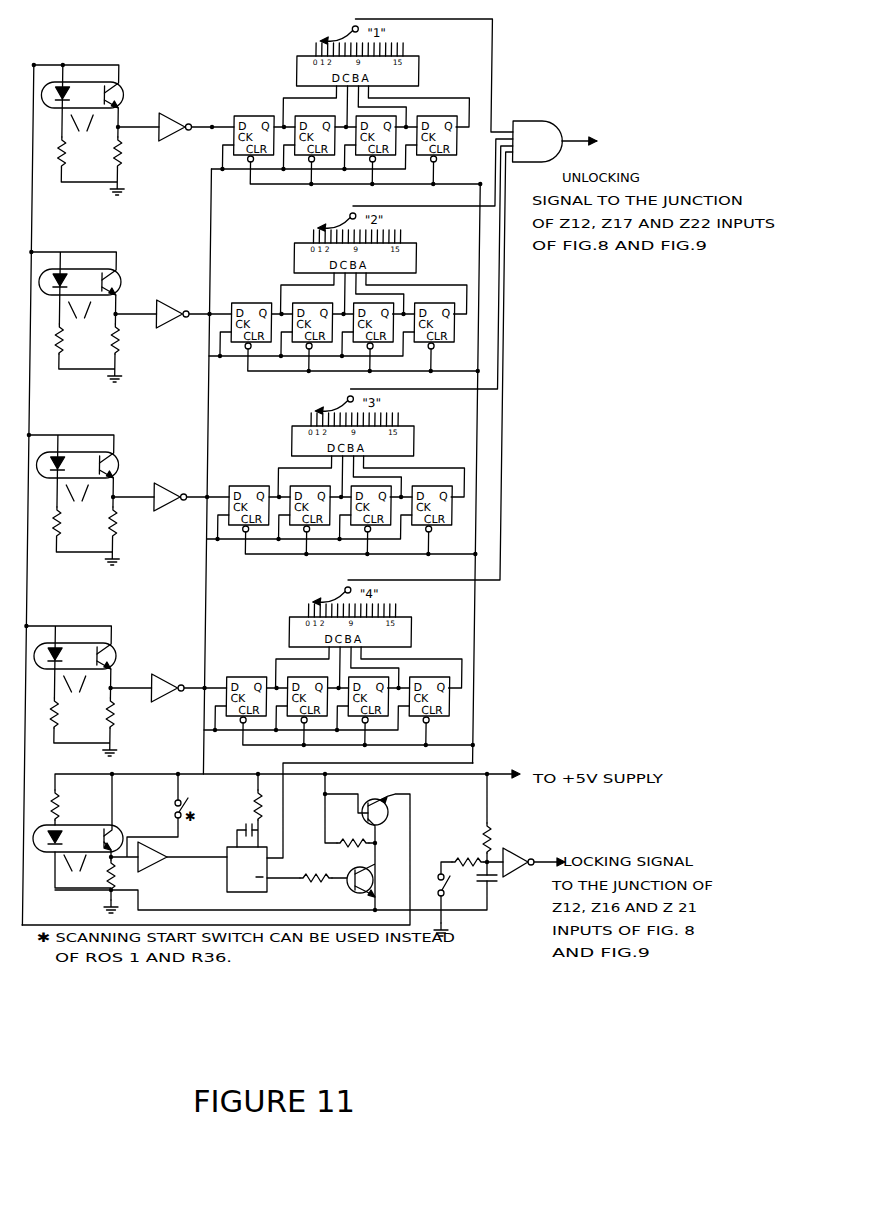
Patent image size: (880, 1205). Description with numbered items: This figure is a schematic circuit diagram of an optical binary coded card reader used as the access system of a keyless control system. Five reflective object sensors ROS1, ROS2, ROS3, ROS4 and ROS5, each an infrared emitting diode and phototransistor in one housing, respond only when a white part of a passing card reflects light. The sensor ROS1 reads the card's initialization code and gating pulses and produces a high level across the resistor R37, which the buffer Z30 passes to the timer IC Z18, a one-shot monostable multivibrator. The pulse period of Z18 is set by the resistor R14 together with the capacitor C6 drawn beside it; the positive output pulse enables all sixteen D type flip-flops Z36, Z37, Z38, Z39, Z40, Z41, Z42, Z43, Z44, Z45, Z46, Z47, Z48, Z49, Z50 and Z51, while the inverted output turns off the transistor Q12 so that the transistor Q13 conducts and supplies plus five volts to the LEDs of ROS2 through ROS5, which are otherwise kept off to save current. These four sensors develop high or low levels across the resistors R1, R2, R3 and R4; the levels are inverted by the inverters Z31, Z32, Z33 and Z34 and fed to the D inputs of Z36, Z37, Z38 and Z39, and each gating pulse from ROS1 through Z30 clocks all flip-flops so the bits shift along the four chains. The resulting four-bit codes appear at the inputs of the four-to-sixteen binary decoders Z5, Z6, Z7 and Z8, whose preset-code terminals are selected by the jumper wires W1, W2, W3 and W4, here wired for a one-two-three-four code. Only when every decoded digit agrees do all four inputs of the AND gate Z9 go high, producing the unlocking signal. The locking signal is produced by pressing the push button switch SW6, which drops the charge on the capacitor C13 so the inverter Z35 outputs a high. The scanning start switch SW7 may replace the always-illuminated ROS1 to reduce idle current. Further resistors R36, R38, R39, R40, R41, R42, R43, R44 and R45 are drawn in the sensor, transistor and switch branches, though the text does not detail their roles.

The reflective object sensor ROS1 is at (93, 841).
The reflective object sensor ROS2 is at (102, 92).
The reflective object sensor ROS3 is at (100, 279).
The reflective object sensor ROS4 is at (97, 462).
The reflective object sensor ROS5 is at (95, 653).
The resistor R1 is at (126, 152).
The resistor R2 is at (124, 339).
The resistor R3 is at (122, 522).
The resistor R4 is at (119, 713).
The resistor R14 is at (270, 805).
The resistor R36 is at (43, 805).
The resistor R37 is at (123, 875).
The resistor R38 is at (314, 888).
The resistor R39 is at (353, 851).
The resistor R40 is at (467, 854).
The resistor R41 is at (500, 838).
The resistor R42 is at (50, 152).
The resistor R43 is at (48, 339).
The resistor R44 is at (46, 522).
The resistor R45 is at (43, 713).
The capacitor C6 is at (238, 825).
The capacitor C13 is at (495, 887).
The transistor Q12 is at (358, 885).
The transistor Q13 is at (385, 820).
The push button switch SW6 is at (457, 889).
The scanning start switch SW7 is at (187, 817).
The jumper wire W1 is at (339, 29).
The jumper wire W2 is at (337, 216).
The jumper wire W3 is at (334, 399).
The jumper wire W4 is at (332, 590).
The 4 to 16 binary decoder Z5 is at (368, 64).
The 4 to 16 binary decoder Z6 is at (365, 251).
The 4 to 16 binary decoder Z7 is at (363, 434).
The 4 to 16 binary decoder Z8 is at (360, 625).
The AND gate Z9 is at (555, 141).
The timer IC Z18 is at (231, 870).
The buffer Z30 is at (157, 863).
The inverter Z31 is at (175, 132).
The inverter Z32 is at (172, 319).
The inverter Z33 is at (170, 502).
The inverter Z34 is at (167, 693).
The inverter Z35 is at (521, 856).
The D type flip-flop Z36 is at (254, 128).
The D type flip-flop Z37 is at (251, 315).
The D type flip-flop Z38 is at (249, 498).
The D type flip-flop Z39 is at (246, 689).
The D type flip-flop Z40 is at (315, 128).
The D type flip-flop Z41 is at (312, 315).
The D type flip-flop Z42 is at (310, 498).
The D type flip-flop Z43 is at (307, 689).
The D type flip-flop Z44 is at (376, 128).
The D type flip-flop Z45 is at (373, 315).
The D type flip-flop Z46 is at (371, 498).
The D type flip-flop Z47 is at (368, 689).
The D type flip-flop Z48 is at (437, 128).
The D type flip-flop Z49 is at (434, 315).
The D type flip-flop Z50 is at (432, 498).
The D type flip-flop Z51 is at (429, 689).